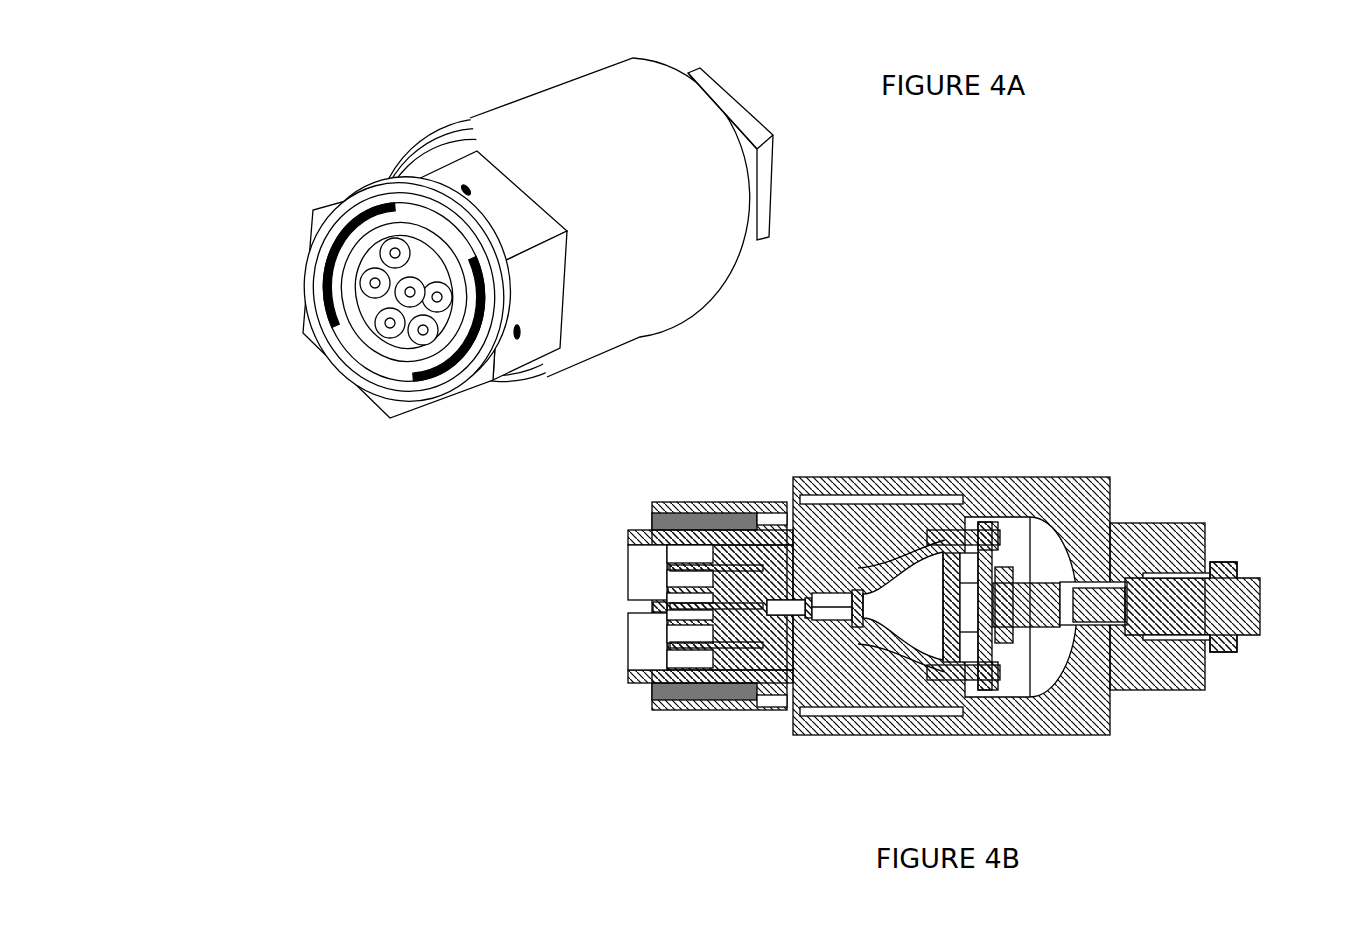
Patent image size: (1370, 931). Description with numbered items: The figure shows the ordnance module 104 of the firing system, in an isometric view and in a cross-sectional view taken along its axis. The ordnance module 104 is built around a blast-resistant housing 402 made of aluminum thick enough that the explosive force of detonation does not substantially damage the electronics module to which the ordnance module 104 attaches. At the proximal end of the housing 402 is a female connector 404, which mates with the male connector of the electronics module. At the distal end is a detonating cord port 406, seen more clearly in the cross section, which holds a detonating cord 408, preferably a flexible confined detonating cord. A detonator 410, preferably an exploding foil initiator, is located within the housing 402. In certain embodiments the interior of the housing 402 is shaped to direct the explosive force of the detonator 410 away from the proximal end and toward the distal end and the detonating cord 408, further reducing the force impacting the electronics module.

In FIG. 4A, the ordnance module 104 is at (356, 92).
In FIG. 4B, the ordnance module 104 is at (1155, 485).
In FIG. 4A, the blast-resistant housing 402 is at (651, 179).
In FIG. 4B, the blast-resistant housing 402 is at (987, 476).
In FIG. 4A, the female connector 404 is at (447, 400).
In FIG. 4B, the female connector 404 is at (638, 642).
In FIG. 4B, the detonating cord port 406 is at (1212, 564).
In FIG. 4B, the detonating cord 408 is at (1261, 620).
In FIG. 4B, the detonator 410 is at (1003, 637).